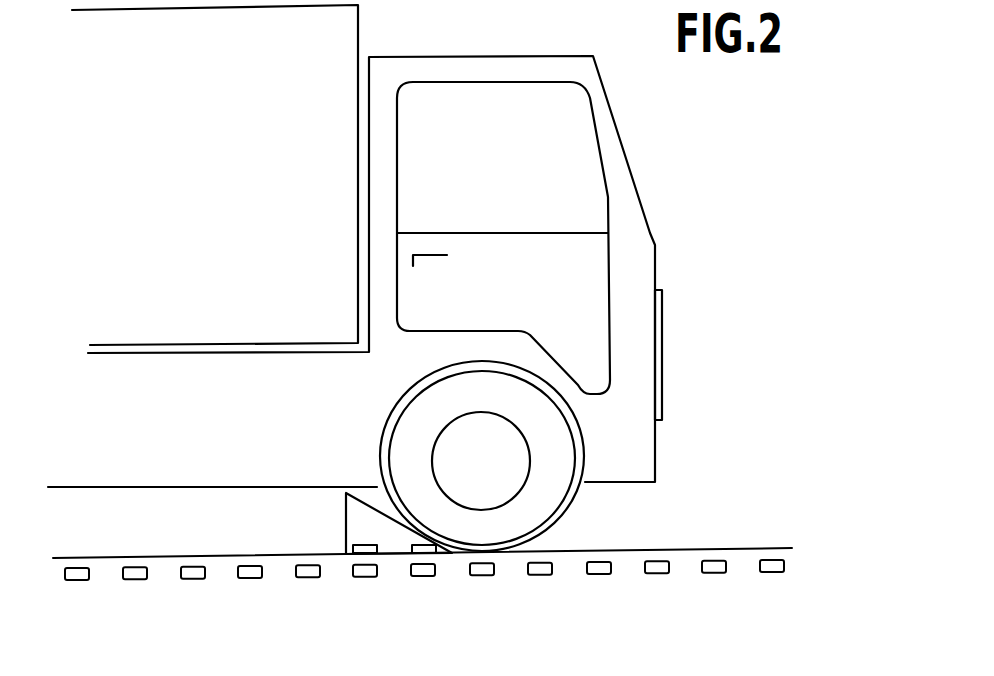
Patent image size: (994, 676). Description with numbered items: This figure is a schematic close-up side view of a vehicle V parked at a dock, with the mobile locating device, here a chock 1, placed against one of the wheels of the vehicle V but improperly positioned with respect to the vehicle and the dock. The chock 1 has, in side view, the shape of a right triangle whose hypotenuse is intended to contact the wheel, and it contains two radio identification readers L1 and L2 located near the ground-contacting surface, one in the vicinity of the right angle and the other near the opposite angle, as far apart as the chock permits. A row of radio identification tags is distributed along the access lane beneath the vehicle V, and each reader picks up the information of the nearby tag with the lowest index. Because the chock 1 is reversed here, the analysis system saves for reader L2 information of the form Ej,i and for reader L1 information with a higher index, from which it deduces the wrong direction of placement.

The chock 1 is at (385, 532).
The radio identification reader L1 is at (421, 545).
The radio identification reader L2 is at (363, 545).
The tag information Ej,i is at (363, 577).
The vehicle V is at (662, 335).